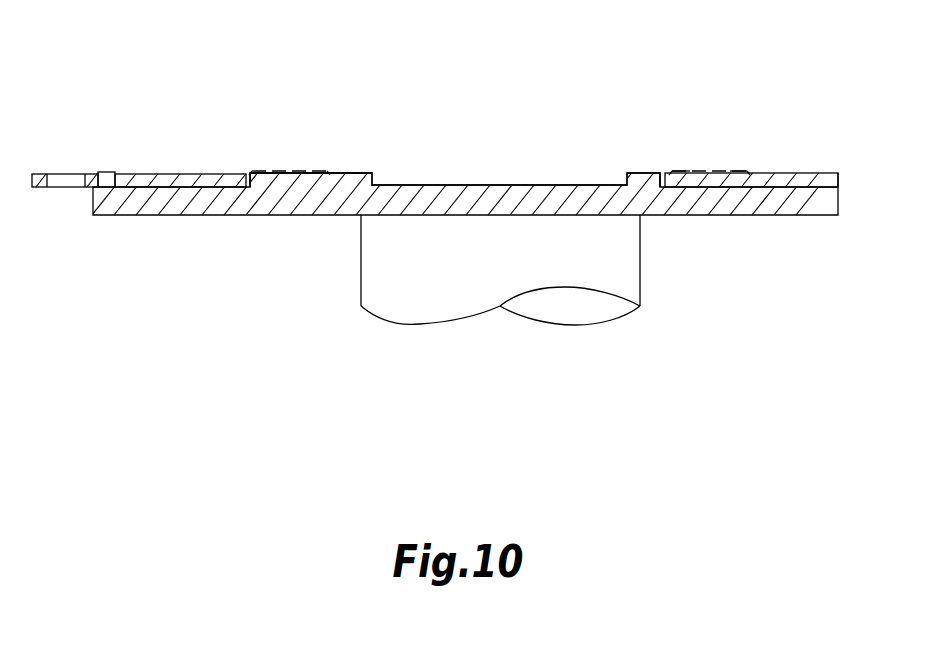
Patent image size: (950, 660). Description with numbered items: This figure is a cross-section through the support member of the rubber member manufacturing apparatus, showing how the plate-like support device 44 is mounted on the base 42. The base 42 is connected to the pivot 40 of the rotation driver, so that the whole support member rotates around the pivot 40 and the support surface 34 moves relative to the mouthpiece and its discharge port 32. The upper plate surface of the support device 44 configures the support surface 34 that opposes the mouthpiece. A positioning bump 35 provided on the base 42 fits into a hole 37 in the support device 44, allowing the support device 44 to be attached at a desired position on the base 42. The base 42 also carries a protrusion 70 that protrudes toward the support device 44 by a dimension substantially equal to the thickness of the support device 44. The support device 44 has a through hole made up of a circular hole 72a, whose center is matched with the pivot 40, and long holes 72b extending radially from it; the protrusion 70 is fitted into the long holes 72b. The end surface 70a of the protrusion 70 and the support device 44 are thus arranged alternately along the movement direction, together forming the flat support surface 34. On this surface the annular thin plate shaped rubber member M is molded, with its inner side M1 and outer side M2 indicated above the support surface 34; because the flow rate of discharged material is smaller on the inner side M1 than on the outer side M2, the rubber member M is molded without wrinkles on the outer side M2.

The discharge port 32 is at (725, 175).
The support surface 34 is at (183, 175).
The positioning bump 35 is at (107, 173).
The hole 37 is at (95, 215).
The pivot 40 is at (447, 282).
The base 42 is at (768, 198).
The support device 44 is at (818, 175).
The protrusion 70 is at (298, 180).
The end surface 70a is at (310, 170).
The circular hole 72a is at (658, 178).
The long holes 72b is at (250, 180).
The rubber member M is at (288, 170).
The inner side M1 is at (682, 170).
The outer side M2 is at (745, 170).